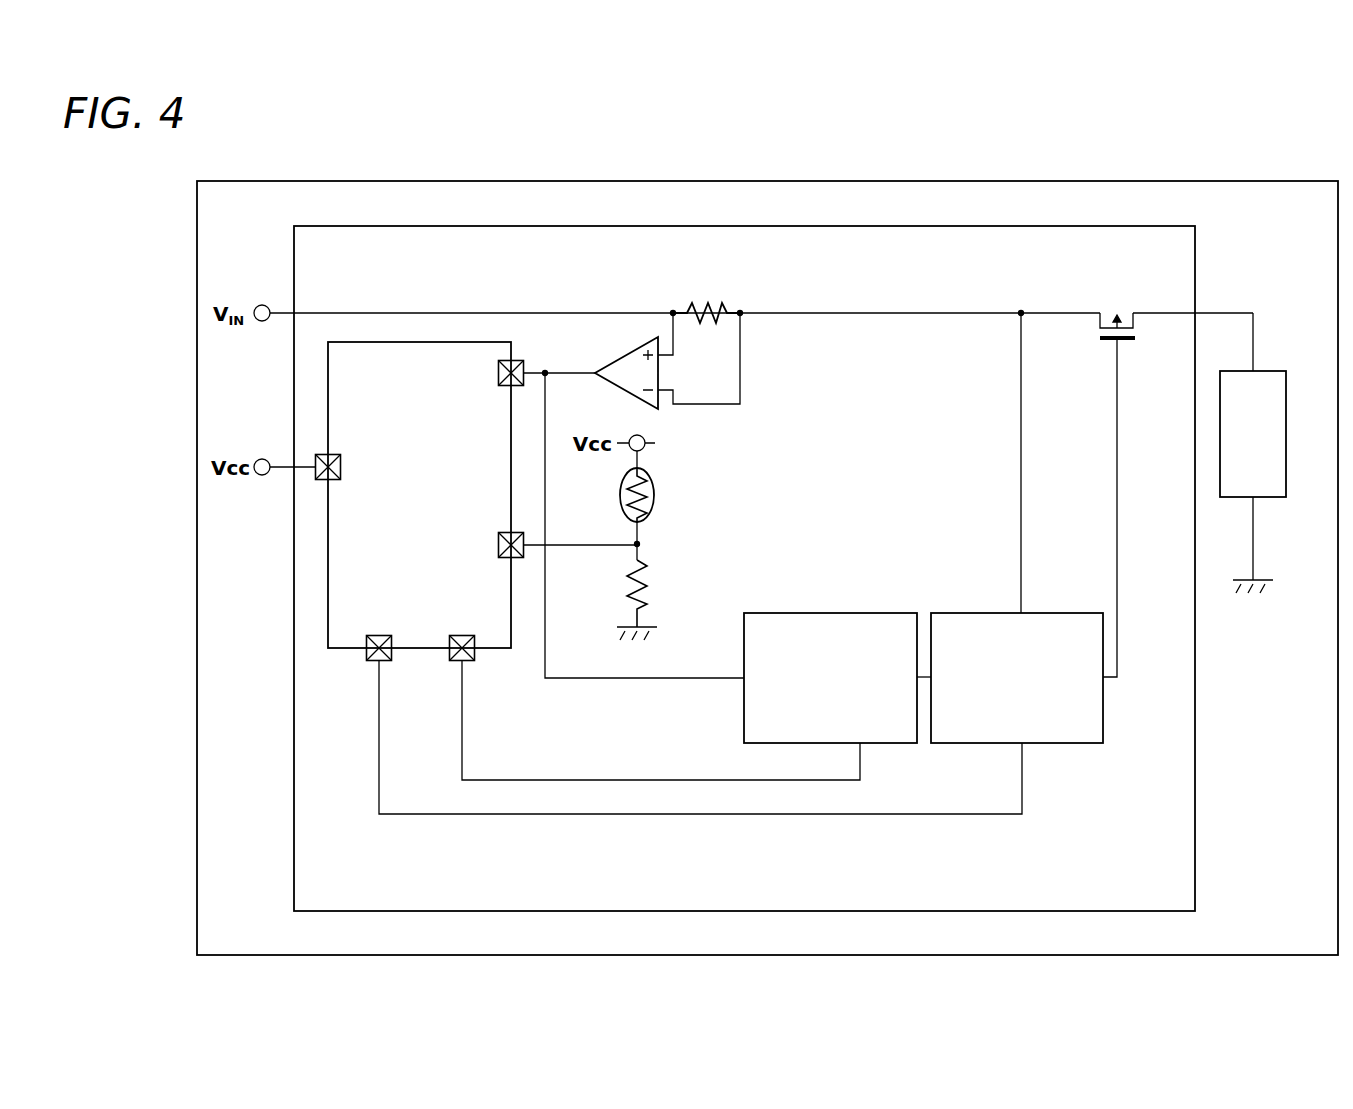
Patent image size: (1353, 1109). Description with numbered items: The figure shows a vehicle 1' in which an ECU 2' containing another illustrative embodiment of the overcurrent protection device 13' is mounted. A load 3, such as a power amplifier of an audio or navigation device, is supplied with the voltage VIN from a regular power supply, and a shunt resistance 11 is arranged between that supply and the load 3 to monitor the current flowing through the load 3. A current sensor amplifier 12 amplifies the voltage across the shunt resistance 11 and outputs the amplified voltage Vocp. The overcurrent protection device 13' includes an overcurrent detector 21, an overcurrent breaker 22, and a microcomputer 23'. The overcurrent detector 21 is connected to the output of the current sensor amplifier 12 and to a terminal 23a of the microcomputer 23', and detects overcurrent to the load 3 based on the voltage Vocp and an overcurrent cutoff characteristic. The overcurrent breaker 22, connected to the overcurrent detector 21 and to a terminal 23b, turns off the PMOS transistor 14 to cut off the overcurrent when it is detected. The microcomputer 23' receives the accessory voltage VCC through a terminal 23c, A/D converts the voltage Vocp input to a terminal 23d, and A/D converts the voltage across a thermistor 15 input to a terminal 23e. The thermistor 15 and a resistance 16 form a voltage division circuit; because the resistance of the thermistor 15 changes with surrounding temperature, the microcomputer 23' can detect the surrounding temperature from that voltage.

The vehicle 1' is at (767, 547).
The ECU 2' is at (775, 552).
The load 3 is at (1270, 370).
The shunt resistance 11 is at (712, 303).
The current sensor amplifier 12 is at (620, 357).
The overcurrent protection device 13' is at (922, 598).
The PMOS transistor 14 is at (1080, 338).
The thermistor 15 is at (650, 482).
The resistance 16 is at (650, 572).
The overcurrent detector 21 is at (852, 612).
The overcurrent breaker 22 is at (958, 612).
The microcomputer 23' is at (557, 500).
The terminal 23a is at (455, 635).
The terminal 23b is at (372, 635).
The terminal 23c is at (340, 462).
The terminal 23d is at (497, 371).
The terminal 23e is at (503, 532).